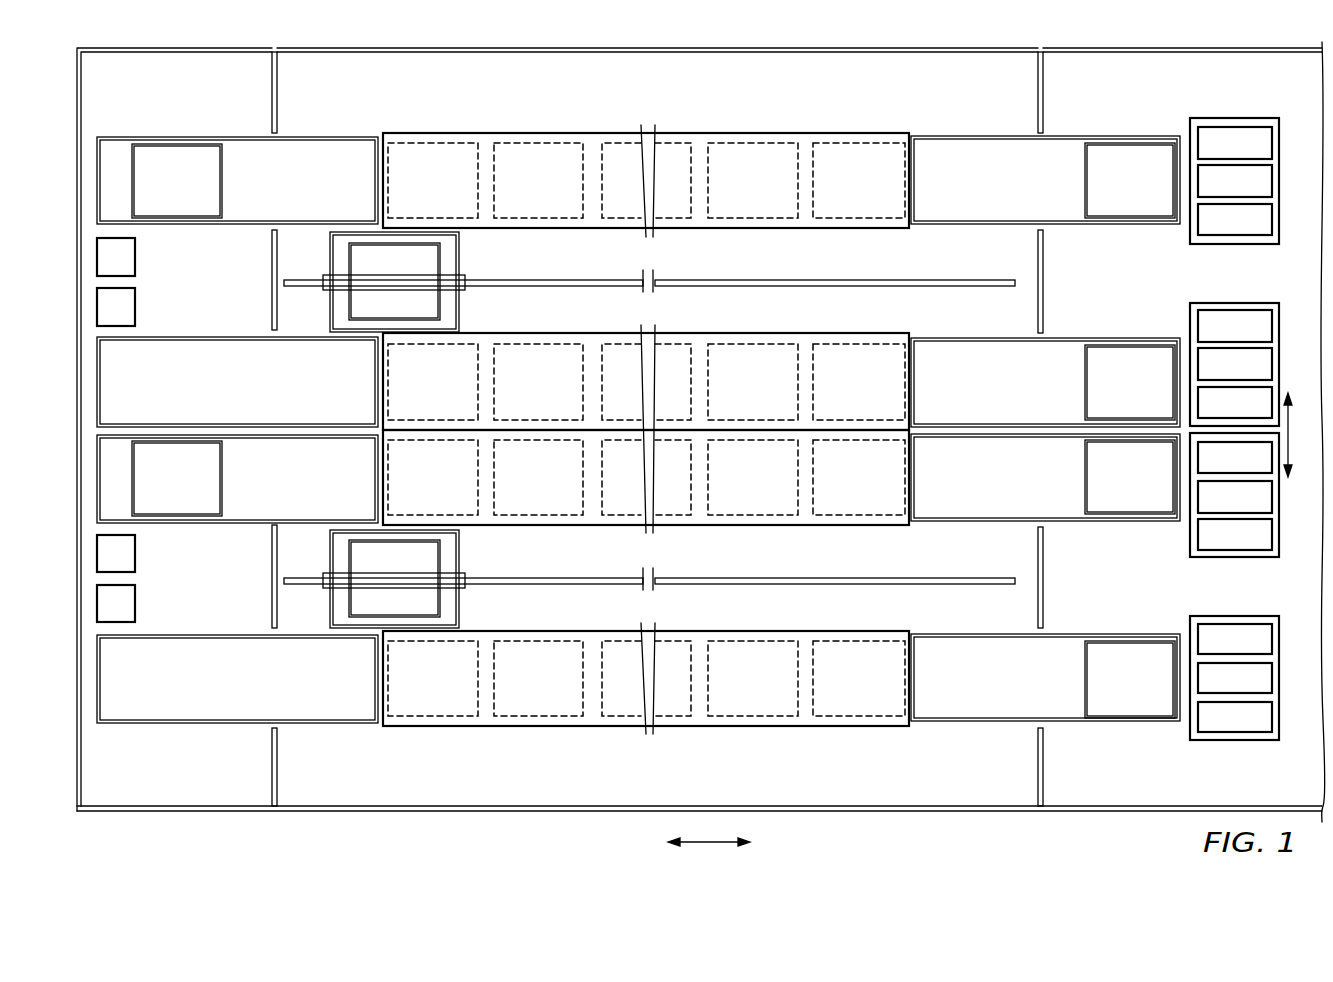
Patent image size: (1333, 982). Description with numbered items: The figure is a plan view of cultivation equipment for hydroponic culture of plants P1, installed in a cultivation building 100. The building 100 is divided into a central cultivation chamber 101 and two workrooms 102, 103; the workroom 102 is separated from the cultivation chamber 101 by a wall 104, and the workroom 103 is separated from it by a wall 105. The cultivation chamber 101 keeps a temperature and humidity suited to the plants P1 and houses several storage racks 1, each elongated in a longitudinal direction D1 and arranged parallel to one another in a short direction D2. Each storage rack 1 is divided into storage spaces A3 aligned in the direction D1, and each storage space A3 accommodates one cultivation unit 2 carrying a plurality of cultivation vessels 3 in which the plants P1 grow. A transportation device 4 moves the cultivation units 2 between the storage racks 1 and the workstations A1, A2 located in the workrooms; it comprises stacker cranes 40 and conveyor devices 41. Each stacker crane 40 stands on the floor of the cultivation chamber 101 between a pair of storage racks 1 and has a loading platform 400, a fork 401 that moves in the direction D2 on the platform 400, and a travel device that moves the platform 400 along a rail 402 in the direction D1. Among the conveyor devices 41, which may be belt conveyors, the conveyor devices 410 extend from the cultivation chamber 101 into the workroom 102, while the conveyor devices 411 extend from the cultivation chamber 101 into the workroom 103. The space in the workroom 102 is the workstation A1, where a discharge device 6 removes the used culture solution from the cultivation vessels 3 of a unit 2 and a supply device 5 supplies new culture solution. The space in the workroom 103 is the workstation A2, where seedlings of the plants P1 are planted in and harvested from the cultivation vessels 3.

The cultivation building 100 is at (1233, 48).
The cultivation chamber 101 is at (767, 79).
The workroom 102 is at (116, 76).
The workroom 103 is at (1125, 63).
The wall 104 is at (277, 92).
The wall 105 is at (1043, 95).
The storage rack 1 is at (843, 133).
The cultivation unit 2 is at (437, 146).
The cultivation vessel 3 is at (1248, 228).
The transportation device 4 is at (401, 430).
The supply device 5 is at (133, 258).
The discharge device 6 is at (133, 308).
The stacker crane 40 is at (330, 257).
The conveyor device 41 is at (638, 432).
The loading platform 400 is at (450, 300).
The fork 401 is at (425, 260).
The rail 402 is at (649, 445).
The conveyor device 410 is at (237, 148).
The conveyor device 411 is at (982, 153).
The plant P1 is at (1262, 145).
The workstation A1 is at (183, 76).
The workstation A2 is at (1072, 65).
The storage space A3 is at (403, 143).
The direction D1 is at (709, 857).
The direction D2 is at (1302, 435).